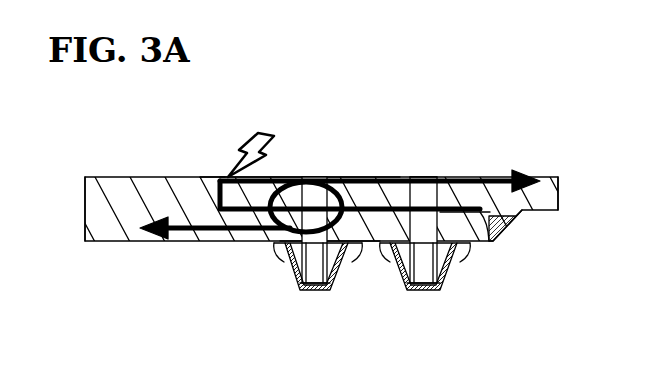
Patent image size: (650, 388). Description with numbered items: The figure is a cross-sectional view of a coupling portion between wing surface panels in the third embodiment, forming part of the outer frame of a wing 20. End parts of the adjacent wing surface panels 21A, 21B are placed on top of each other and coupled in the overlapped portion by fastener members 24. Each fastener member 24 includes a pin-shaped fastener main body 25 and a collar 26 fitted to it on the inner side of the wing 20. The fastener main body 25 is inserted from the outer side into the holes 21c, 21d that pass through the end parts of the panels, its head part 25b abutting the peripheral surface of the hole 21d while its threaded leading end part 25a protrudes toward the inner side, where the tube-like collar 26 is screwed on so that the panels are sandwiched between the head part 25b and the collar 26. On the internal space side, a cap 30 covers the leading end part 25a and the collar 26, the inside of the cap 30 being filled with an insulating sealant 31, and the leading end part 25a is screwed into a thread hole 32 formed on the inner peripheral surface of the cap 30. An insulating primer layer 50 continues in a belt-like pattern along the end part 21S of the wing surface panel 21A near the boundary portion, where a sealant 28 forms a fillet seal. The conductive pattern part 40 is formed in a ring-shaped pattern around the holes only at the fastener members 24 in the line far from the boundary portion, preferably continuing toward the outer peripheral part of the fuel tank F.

The wing 20 is at (328, 214).
The wing surface panel 21A is at (132, 186).
The wing surface panel 21B is at (553, 178).
The hole 21c is at (330, 285).
The hole 21d is at (305, 176).
The end part 21S is at (502, 235).
The fastener member 24 is at (380, 236).
The fastener main body 25 is at (318, 177).
The leading end part 25a is at (440, 286).
The head part 25b is at (443, 177).
The collar 26 is at (283, 258).
The sealant 28 is at (523, 217).
The cap 30 is at (335, 283).
The insulating sealant 31 is at (353, 250).
The thread hole 32 is at (310, 293).
The conductive pattern part 40 is at (283, 178).
The insulating primer layer 50 is at (212, 177).
The fuel tank F is at (572, 332).